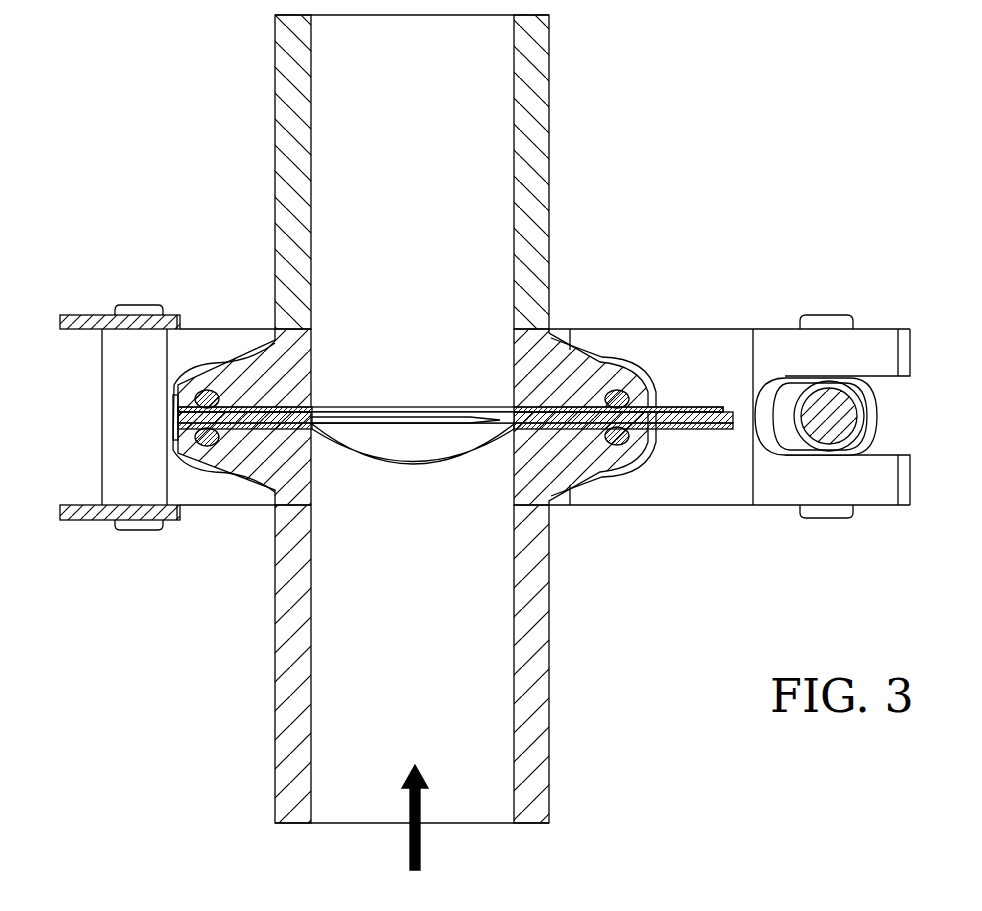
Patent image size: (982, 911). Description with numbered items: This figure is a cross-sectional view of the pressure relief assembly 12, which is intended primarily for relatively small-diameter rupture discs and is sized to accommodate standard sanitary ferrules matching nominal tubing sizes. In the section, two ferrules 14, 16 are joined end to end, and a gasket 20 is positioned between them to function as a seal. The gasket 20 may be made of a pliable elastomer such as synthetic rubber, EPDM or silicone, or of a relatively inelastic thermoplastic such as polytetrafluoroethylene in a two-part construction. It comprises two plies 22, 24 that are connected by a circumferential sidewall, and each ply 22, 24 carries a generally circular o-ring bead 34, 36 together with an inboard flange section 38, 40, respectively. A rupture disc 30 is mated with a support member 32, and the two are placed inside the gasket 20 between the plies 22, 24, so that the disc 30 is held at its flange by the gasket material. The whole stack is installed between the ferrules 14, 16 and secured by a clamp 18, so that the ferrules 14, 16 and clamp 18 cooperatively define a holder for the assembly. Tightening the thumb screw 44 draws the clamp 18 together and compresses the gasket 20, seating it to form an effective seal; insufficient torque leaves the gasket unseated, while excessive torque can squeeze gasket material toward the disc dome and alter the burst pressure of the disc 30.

The pressure relief assembly 12 is at (173, 181).
The ferrule 14 is at (543, 720).
The ferrule 16 is at (540, 117).
The clamp 18 is at (620, 506).
The gasket 20 is at (598, 378).
The ply 22 is at (520, 440).
The ply 24 is at (305, 392).
The rupture disc 30 is at (313, 447).
The support member 32 is at (521, 402).
The o-ring bead 34 is at (623, 443).
The o-ring bead 36 is at (623, 393).
The inboard flange section 38 is at (300, 445).
The inboard flange section 40 is at (304, 398).
The thumb screw 44 is at (860, 417).